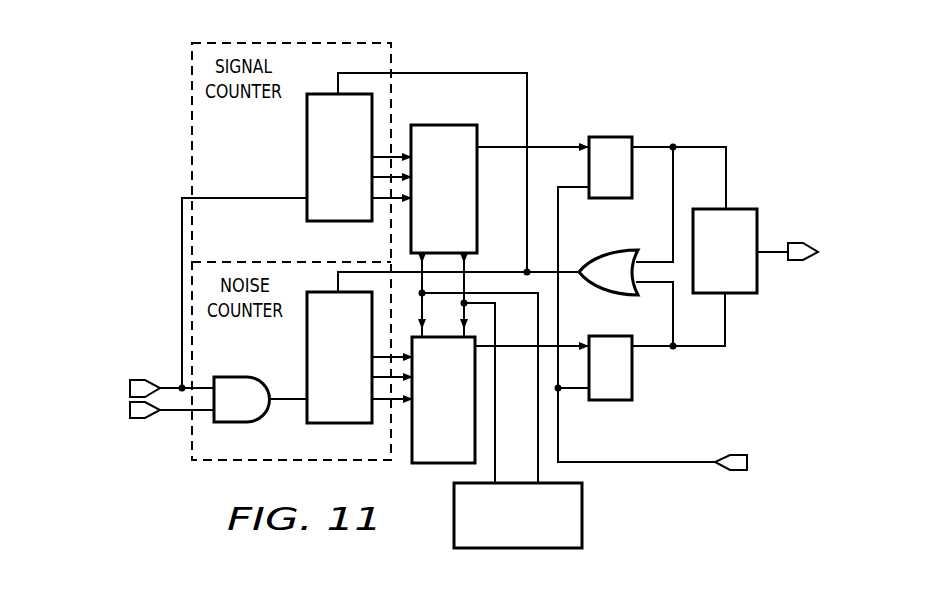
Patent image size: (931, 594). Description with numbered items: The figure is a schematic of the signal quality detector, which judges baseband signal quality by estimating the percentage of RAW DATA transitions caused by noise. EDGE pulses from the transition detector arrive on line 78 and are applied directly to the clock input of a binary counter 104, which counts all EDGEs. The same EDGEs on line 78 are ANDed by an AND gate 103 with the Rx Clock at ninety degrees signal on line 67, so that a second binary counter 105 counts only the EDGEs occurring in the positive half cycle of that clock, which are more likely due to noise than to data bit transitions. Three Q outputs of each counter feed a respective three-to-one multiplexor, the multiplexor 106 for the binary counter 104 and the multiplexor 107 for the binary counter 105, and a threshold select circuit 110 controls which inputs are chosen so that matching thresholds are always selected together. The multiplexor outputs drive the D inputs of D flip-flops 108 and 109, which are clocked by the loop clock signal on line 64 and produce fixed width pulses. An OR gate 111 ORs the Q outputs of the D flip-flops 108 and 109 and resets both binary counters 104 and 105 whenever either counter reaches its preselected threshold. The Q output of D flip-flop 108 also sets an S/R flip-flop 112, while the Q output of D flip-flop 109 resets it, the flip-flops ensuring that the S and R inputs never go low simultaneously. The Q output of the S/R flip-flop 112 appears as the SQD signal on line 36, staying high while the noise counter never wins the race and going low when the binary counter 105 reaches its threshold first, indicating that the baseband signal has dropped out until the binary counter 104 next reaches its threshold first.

The SQD output line 36 is at (796, 243).
The loop clock signal line 64 is at (737, 471).
The Rx Clock 90° signal line 67 is at (170, 413).
The transition detector output line 78 is at (170, 388).
The AND gate 103 is at (243, 382).
The binary counter 104 is at (358, 173).
The binary counter 105 is at (358, 371).
The 3:1 multiplexor 106 is at (462, 232).
The 3:1 multiplexor 107 is at (462, 449).
The D flip-flop 108 is at (610, 137).
The D flip-flop 109 is at (605, 401).
The threshold select circuit 110 is at (582, 516).
The OR gate 111 is at (630, 260).
The S/R flip-flop 112 is at (738, 209).